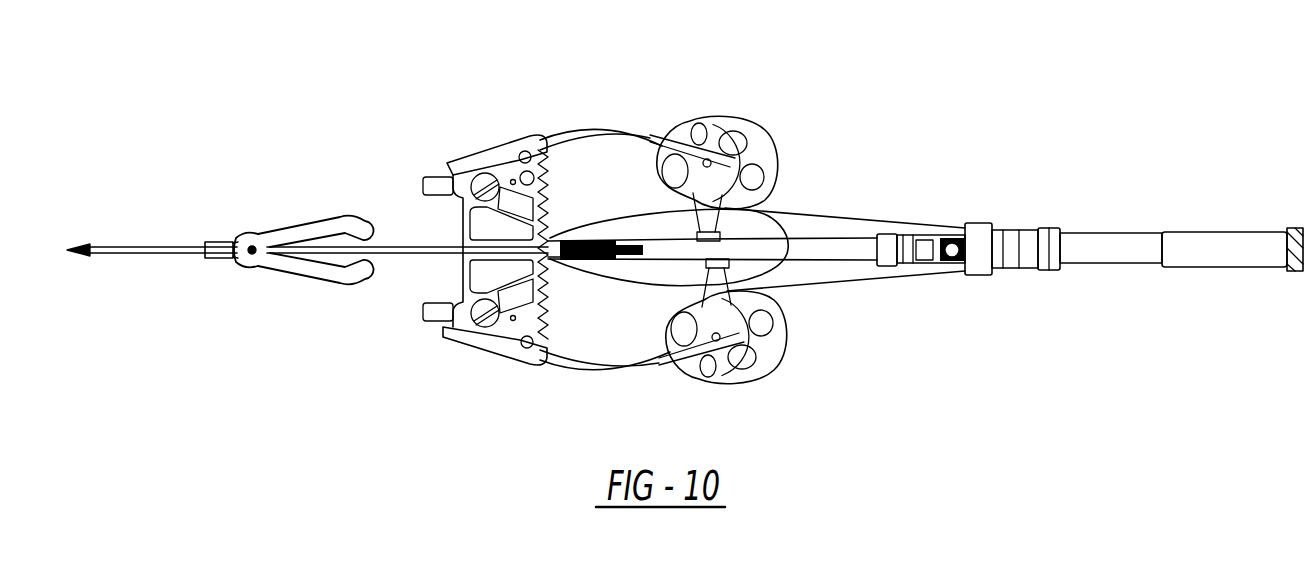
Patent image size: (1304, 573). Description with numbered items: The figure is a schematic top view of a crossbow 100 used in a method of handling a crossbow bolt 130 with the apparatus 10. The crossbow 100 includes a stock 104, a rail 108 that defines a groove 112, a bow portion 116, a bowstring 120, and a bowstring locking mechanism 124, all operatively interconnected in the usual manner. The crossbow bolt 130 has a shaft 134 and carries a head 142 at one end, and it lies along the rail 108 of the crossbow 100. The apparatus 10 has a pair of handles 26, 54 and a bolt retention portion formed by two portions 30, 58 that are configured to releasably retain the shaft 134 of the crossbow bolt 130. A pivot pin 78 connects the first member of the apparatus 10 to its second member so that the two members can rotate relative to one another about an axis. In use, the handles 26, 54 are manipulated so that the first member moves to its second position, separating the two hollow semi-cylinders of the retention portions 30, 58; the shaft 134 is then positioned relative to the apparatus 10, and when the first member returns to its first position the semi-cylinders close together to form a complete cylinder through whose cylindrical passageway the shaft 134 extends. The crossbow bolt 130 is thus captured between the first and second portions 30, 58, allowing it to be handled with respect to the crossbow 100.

The apparatus 10 is at (288, 232).
The handle 26 is at (341, 220).
The bolt retention portion 30 is at (211, 261).
The handle 54 is at (330, 281).
The bolt retention portion 58 is at (213, 238).
The pivot pin 78 is at (253, 258).
The crossbow 100 is at (455, 98).
The stock 104 is at (1218, 231).
The rail 108 is at (567, 237).
The groove 112 is at (795, 250).
The bow portion 116 is at (512, 198).
The bowstring 120 is at (824, 215).
The bowstring locking mechanism 124 is at (1036, 210).
The crossbow bolt 130 is at (562, 258).
The shaft 134 is at (420, 247).
The head 142 is at (67, 246).